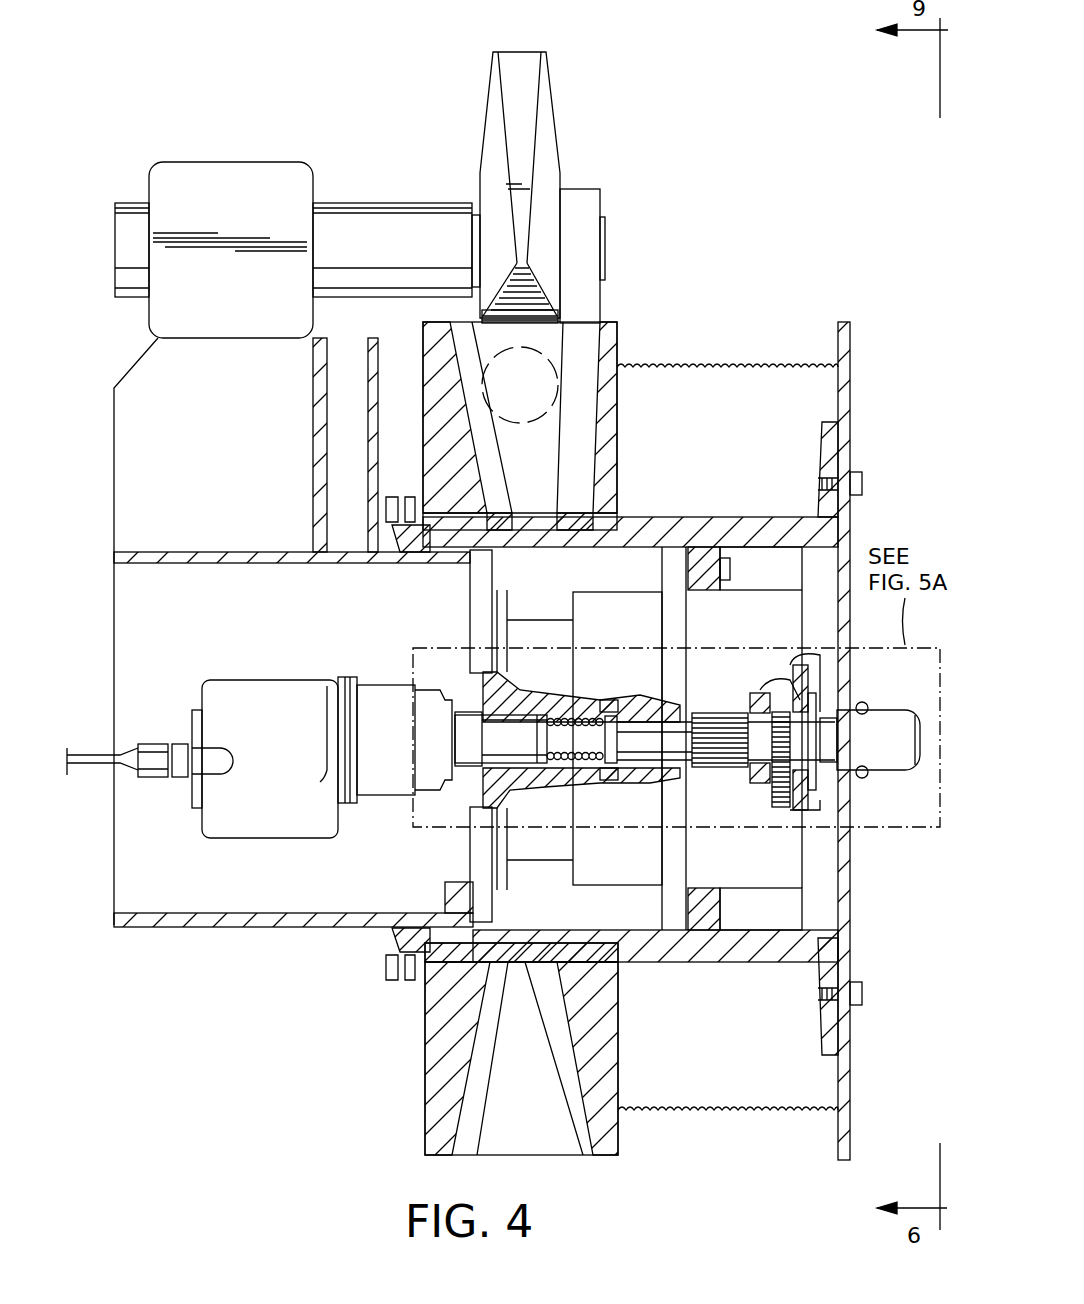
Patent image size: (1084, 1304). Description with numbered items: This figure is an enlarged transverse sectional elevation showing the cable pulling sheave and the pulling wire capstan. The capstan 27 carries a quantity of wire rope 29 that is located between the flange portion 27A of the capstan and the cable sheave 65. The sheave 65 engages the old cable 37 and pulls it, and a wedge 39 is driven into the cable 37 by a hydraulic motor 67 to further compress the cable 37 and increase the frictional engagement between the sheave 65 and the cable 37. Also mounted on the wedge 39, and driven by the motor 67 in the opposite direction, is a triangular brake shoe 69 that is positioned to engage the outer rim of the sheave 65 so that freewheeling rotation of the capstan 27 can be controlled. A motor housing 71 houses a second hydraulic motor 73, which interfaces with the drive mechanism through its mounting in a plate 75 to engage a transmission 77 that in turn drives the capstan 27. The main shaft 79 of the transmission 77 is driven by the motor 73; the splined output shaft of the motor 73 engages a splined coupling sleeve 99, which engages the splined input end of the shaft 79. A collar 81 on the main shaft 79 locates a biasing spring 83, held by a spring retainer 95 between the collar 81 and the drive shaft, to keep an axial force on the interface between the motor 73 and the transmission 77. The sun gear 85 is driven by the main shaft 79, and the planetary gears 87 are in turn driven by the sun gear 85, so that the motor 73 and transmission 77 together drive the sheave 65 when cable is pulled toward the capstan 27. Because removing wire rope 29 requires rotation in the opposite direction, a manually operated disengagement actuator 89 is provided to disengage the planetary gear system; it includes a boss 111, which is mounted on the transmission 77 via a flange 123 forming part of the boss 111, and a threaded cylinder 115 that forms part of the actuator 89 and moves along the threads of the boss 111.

The capstan 27 is at (850, 340).
The flange portion 27A is at (840, 400).
The wire rope 29 is at (755, 362).
The old cable 37 is at (556, 398).
The wedge 39 is at (607, 142).
The cable sheave 65 is at (617, 338).
The hydraulic motor 67 is at (238, 162).
The brake 69 is at (648, 210).
The motor housing 71 is at (176, 552).
The hydraulic motor 73 is at (262, 680).
The plate 75 is at (425, 690).
The transmission 77 is at (537, 630).
The main shaft 79 is at (640, 762).
The collar 81 is at (608, 716).
The biasing spring 83 is at (595, 780).
The sun gear 85 is at (772, 705).
The planetary gears 87 is at (780, 808).
The manually operated disengagement actuator 89 is at (920, 804).
The spring retainer 95 is at (543, 718).
The splined coupling sleeve 99 is at (505, 748).
The boss 111 is at (830, 708).
The threaded cylinder 115 is at (895, 710).
The flange 123 is at (818, 790).